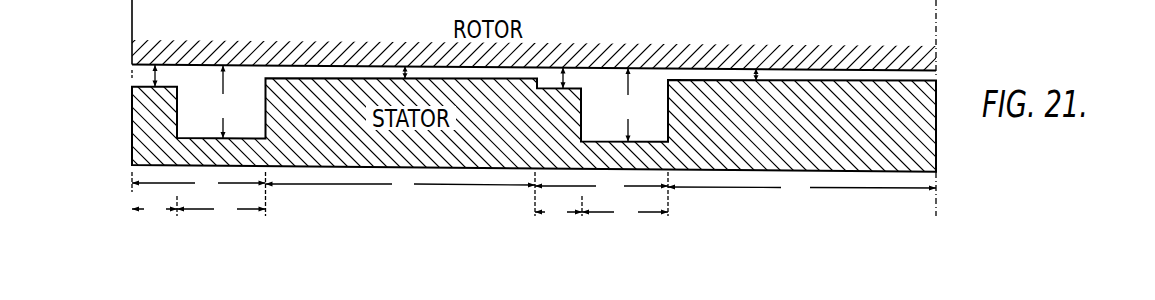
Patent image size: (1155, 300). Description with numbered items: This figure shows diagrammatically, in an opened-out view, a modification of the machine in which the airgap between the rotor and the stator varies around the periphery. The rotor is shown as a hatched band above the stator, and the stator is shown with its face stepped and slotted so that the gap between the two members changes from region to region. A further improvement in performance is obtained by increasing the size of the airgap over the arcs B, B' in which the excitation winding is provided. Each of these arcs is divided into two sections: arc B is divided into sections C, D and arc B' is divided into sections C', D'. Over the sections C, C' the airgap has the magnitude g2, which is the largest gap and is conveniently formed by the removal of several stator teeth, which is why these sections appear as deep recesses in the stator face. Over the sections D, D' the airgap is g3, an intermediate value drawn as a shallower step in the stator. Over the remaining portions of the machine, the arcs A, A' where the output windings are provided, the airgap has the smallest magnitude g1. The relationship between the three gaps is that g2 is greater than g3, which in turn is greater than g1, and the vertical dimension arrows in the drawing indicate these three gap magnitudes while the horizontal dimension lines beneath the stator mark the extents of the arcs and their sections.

The airgap g1 is at (800, 34).
The airgap g2 is at (428, 104).
The airgap g3 is at (159, 75).
The arc A is at (401, 184).
The arc B is at (199, 184).
The section C is at (221, 208).
The section D is at (154, 208).
The arc A' is at (802, 187).
The arc B' is at (601, 185).
The section C' is at (625, 211).
The section D' is at (558, 211).